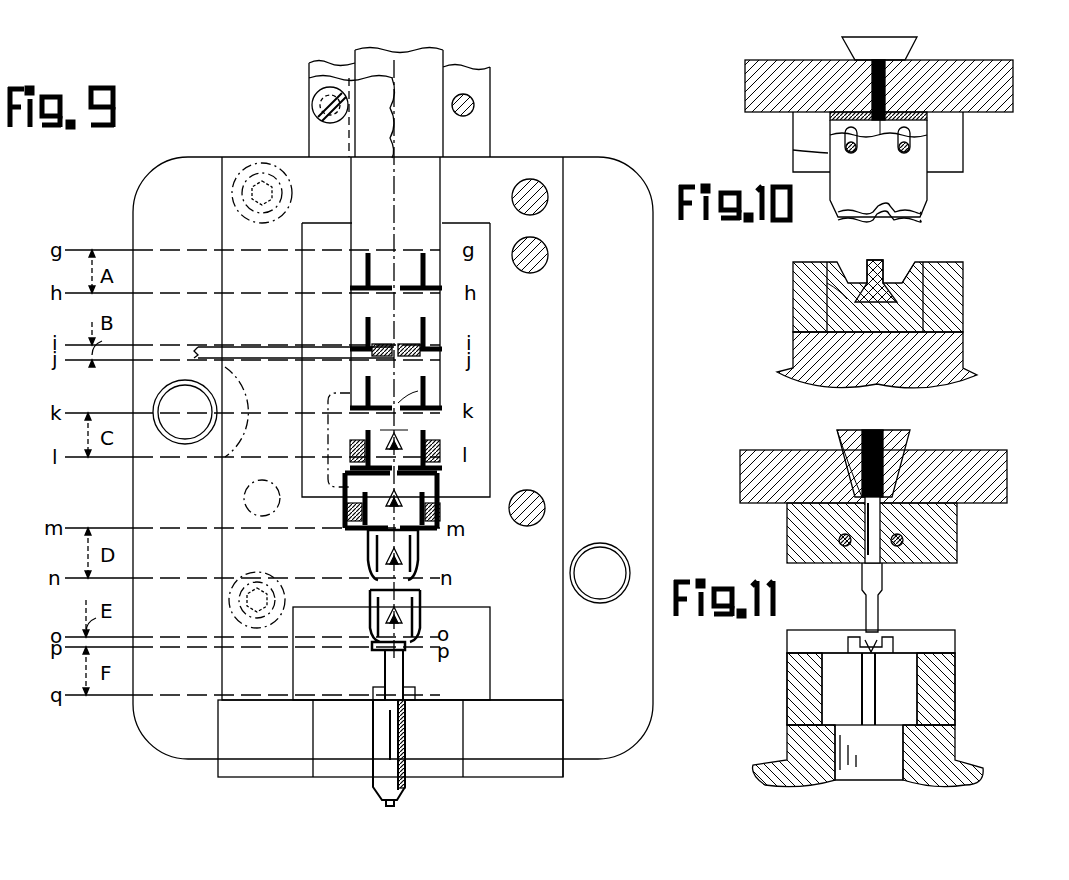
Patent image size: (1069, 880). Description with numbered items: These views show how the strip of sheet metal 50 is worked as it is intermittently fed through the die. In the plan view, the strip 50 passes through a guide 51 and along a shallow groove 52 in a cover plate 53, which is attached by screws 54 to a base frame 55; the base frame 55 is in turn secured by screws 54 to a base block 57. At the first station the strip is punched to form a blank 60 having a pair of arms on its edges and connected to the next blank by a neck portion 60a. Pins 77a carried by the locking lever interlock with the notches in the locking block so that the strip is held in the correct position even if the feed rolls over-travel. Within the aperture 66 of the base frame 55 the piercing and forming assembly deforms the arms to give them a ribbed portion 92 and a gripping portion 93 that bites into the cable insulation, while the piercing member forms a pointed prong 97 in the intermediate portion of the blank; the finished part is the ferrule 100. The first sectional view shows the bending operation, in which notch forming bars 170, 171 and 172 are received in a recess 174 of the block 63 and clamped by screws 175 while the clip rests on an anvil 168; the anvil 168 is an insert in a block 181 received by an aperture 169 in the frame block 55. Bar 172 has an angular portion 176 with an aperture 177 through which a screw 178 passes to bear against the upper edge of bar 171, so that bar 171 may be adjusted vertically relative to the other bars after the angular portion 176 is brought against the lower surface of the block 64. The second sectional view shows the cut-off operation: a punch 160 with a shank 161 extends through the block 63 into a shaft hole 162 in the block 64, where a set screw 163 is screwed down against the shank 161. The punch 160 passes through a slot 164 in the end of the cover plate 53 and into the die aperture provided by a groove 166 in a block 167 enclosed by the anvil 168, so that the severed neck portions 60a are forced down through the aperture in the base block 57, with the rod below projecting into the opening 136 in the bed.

In FIG. 9, the strip of sheet metal 50 is at (444, 65).
In FIG. 9, the guide 51 is at (332, 76).
In FIG. 9, the cover plate 53 is at (328, 400).
In FIG. 11, the cover plate 53 is at (958, 637).
In FIG. 9, the screws 54 is at (276, 188).
In FIG. 9, the base frame 55 is at (264, 157).
In FIG. 10, the base frame 55 is at (963, 318).
In FIG. 11, the base frame 55 is at (958, 662).
In FIG. 9, the base block 57 is at (650, 318).
In FIG. 10, the base block 57 is at (963, 353).
In FIG. 11, the base block 57 is at (955, 740).
In FIG. 9, the blank 60 is at (503, 313).
In FIG. 9, the neck portion 60a is at (398, 403).
In FIG. 9, the aperture 66 is at (497, 432).
In FIG. 9, the pins 77a is at (380, 344).
In FIG. 9, the ribbed portion 92 is at (384, 684).
In FIG. 9, the gripping portion 93 is at (382, 708).
In FIG. 9, the pointed prong 97 is at (406, 452).
In FIG. 9, the ferrule 100 is at (400, 660).
In FIG. 9, the aperture 169 is at (497, 647).
In FIG. 10, the aperture 169 is at (830, 306).
In FIG. 10, the block 63 is at (965, 153).
In FIG. 11, the block 63 is at (958, 555).
In FIG. 10, the block 64 is at (1013, 90).
In FIG. 11, the block 64 is at (1007, 477).
In FIG. 10, the anvil 168 is at (875, 261).
In FIG. 10, the notch forming bar 170 is at (922, 182).
In FIG. 10, the notch forming bar 171 is at (920, 212).
In FIG. 10, the notch forming bar 172 is at (914, 224).
In FIG. 10, the recess 174 is at (830, 155).
In FIG. 10, the screws 175 is at (896, 184).
In FIG. 11, the screws 175 is at (907, 578).
In FIG. 10, the angular portion 176 is at (830, 118).
In FIG. 10, the aperture 177 is at (892, 125).
In FIG. 10, the screw 178 is at (875, 90).
In FIG. 10, the block 181 is at (922, 292).
In FIG. 11, the shallow groove 52 is at (856, 658).
In FIG. 11, the opening 136 is at (878, 778).
In FIG. 11, the punch 160 is at (883, 602).
In FIG. 11, the shank 161 is at (882, 515).
In FIG. 11, the shaft hole 162 is at (890, 480).
In FIG. 11, the set screw 163 is at (850, 470).
In FIG. 11, the slot 164 is at (868, 637).
In FIG. 11, the groove 166 is at (876, 682).
In FIG. 11, the block 167 is at (910, 707).